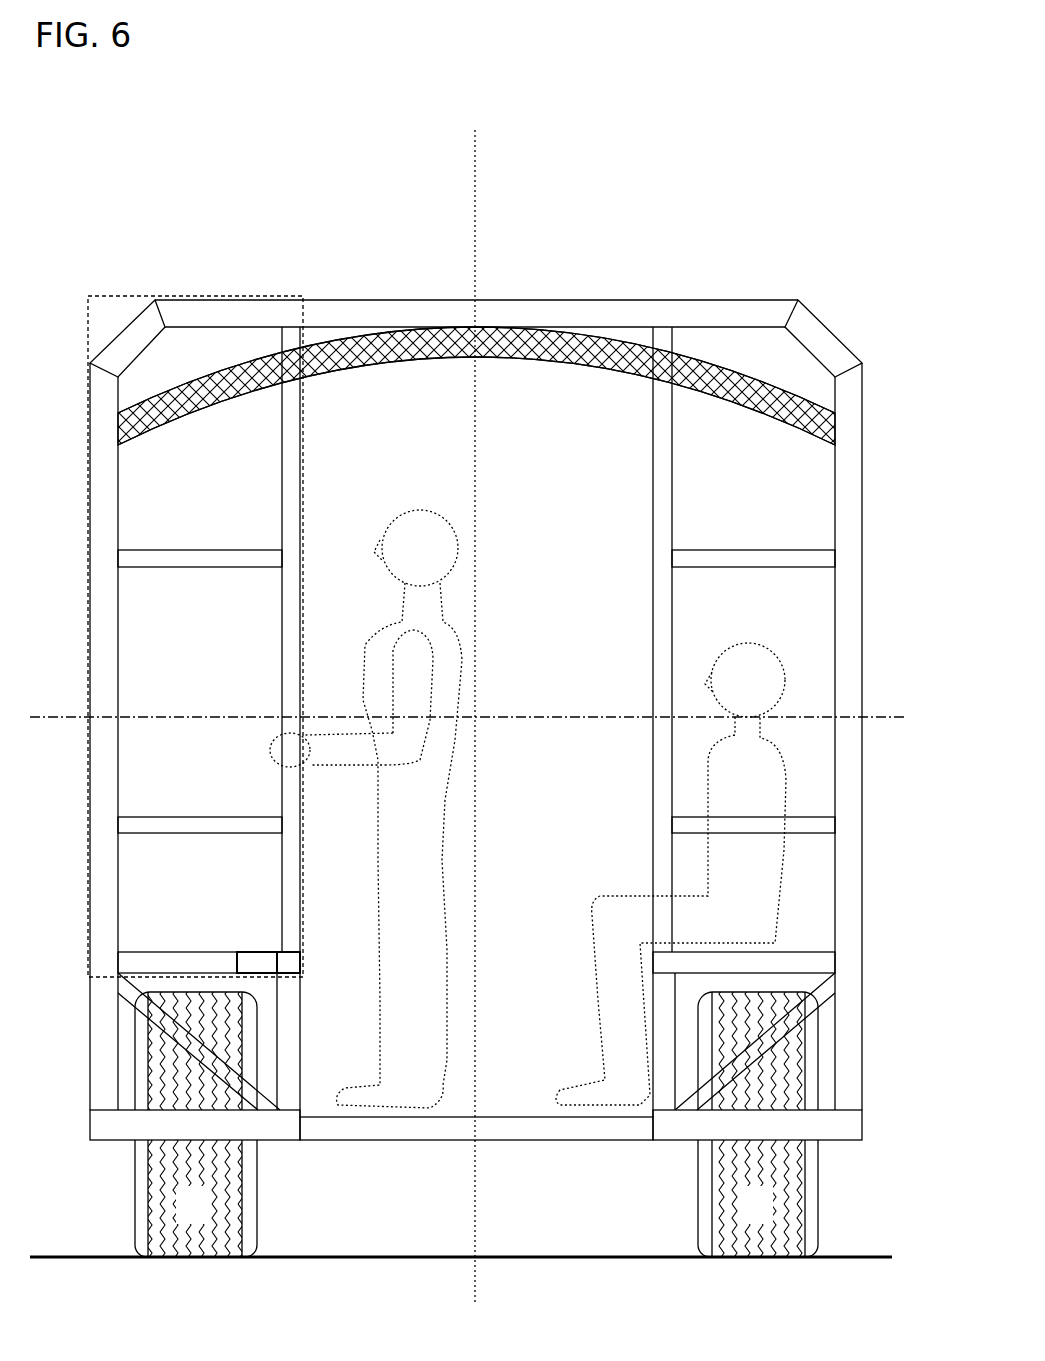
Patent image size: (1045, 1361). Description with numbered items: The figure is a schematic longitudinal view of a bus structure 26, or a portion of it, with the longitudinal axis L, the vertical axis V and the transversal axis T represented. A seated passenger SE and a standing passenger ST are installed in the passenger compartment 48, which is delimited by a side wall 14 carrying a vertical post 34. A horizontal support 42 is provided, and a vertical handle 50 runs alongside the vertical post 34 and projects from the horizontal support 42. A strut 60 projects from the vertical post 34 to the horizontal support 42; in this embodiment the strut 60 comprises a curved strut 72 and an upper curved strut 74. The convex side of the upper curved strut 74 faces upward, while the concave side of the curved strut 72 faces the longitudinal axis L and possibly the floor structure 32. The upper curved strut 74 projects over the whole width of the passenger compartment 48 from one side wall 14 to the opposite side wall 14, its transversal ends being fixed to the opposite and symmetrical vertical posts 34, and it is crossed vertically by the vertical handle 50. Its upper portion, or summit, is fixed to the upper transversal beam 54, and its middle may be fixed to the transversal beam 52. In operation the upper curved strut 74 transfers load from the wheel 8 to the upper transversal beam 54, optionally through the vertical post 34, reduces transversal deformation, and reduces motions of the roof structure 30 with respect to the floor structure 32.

The wheel 8 is at (476, 1124).
The side wall 14 is at (103, 597).
The bus structure 26 is at (308, 202).
The roof structure 30 is at (642, 180).
The floor structure 32 is at (476, 1099).
The vertical post 34 is at (103, 862).
The horizontal support 42 is at (517, 203).
The passenger compartment 48 is at (582, 570).
The vertical handle 50 is at (290, 465).
The transversal beam 52 is at (413, 305).
The upper transversal beam 54 is at (563, 305).
The strut 60 is at (519, 428).
The curved strut 72 is at (607, 375).
The upper curved strut 74 is at (213, 405).
The longitudinal axis L is at (480, 713).
The transversal axis T is at (562, 720).
The vertical axis V is at (478, 1212).
The standing passenger ST is at (366, 809).
The seated passenger SE is at (671, 874).